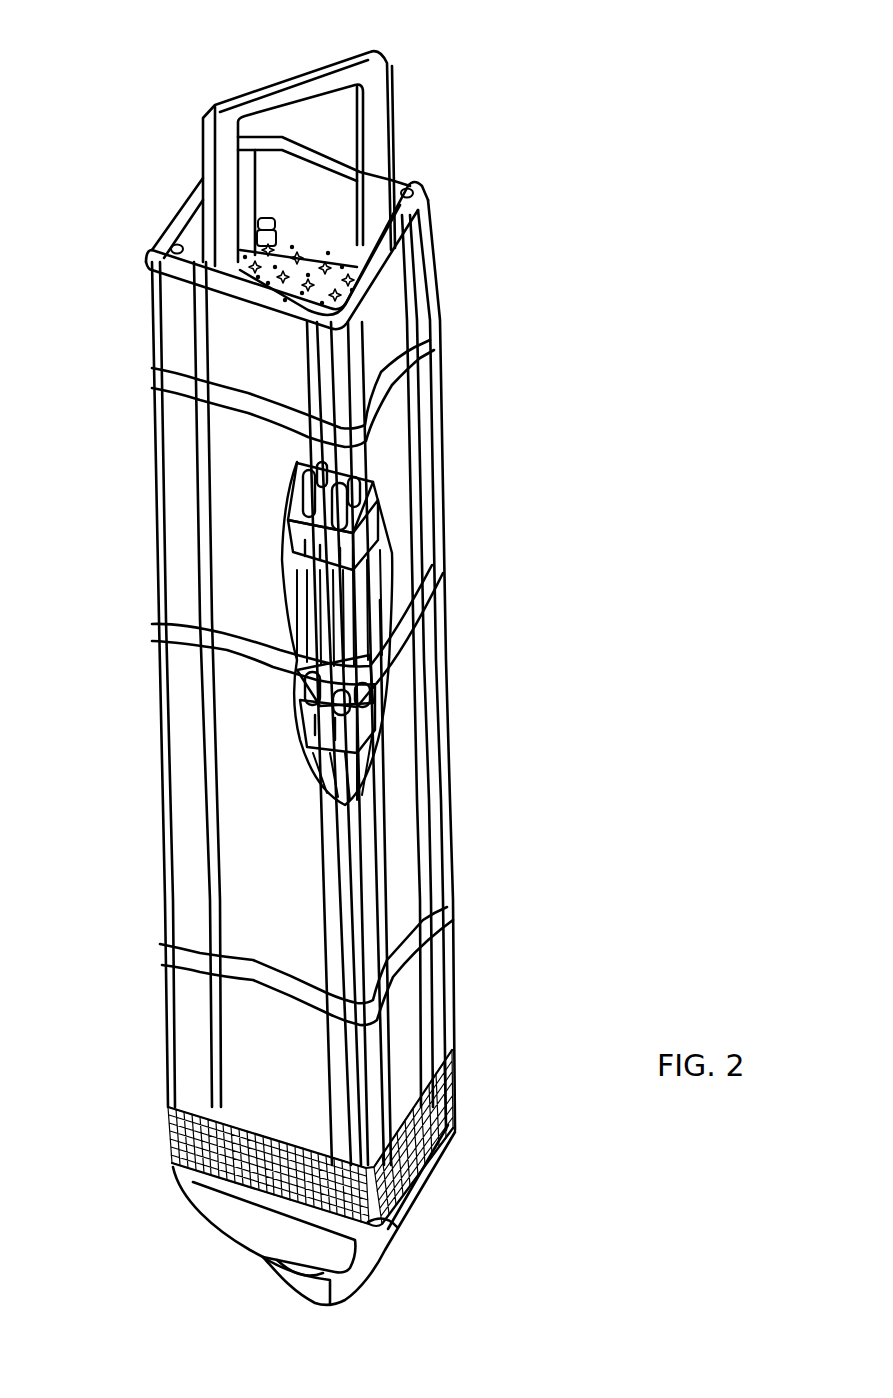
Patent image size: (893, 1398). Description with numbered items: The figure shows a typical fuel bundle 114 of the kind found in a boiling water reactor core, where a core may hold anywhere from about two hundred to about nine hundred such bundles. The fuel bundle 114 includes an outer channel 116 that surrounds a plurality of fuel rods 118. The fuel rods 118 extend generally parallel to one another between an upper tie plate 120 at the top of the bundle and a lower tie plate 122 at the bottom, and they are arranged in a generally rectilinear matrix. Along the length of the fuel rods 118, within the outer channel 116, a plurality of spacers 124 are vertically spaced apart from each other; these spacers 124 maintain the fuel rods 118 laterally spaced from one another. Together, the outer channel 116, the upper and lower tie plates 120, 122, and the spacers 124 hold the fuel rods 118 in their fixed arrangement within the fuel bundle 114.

The fuel bundle 114 is at (447, 803).
The outer channel 116 is at (153, 408).
The fuel rods 118 is at (407, 633).
The upper tie plate 120 is at (291, 243).
The lower tie plate 122 is at (422, 1196).
The spacers 124 is at (372, 510).